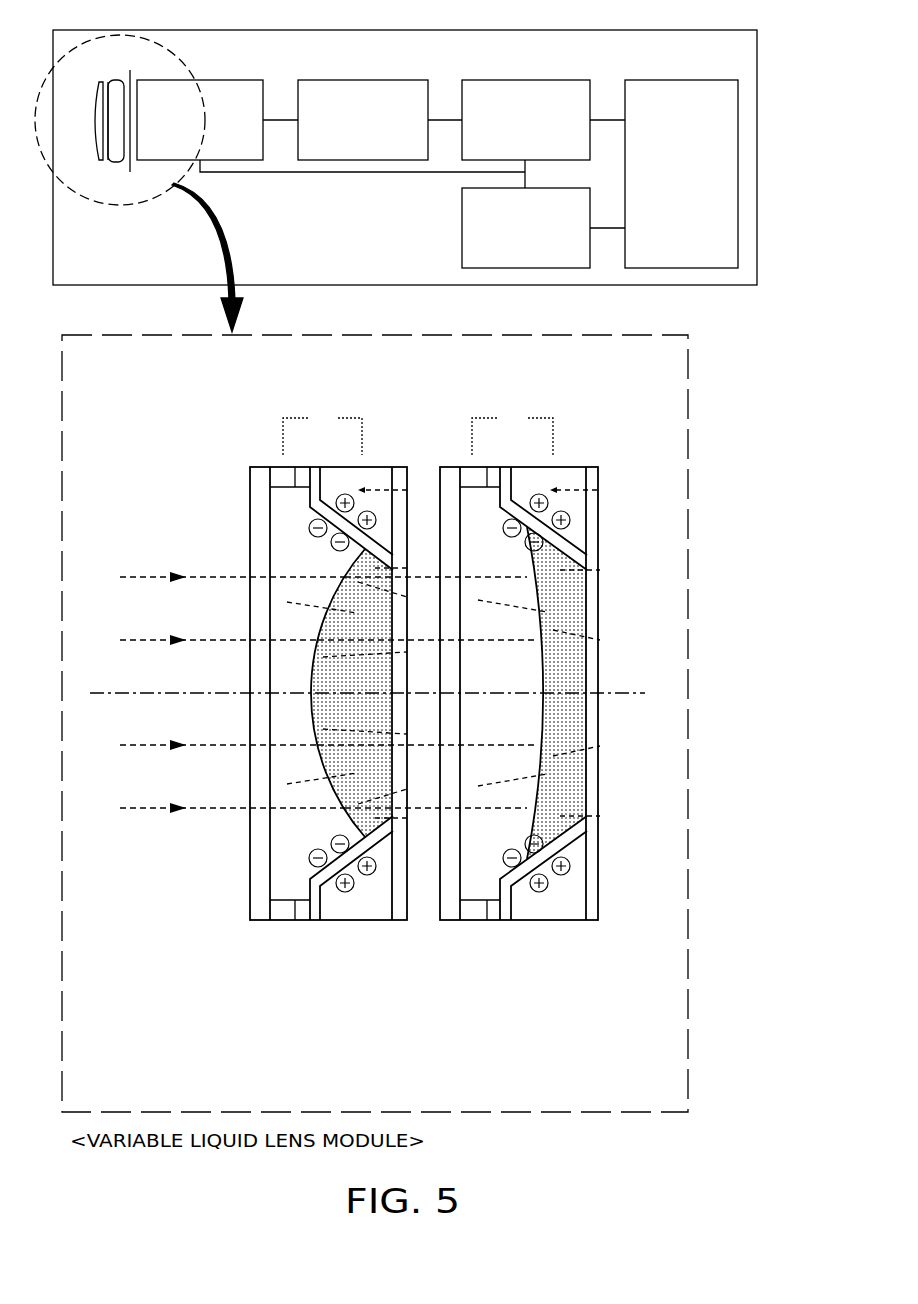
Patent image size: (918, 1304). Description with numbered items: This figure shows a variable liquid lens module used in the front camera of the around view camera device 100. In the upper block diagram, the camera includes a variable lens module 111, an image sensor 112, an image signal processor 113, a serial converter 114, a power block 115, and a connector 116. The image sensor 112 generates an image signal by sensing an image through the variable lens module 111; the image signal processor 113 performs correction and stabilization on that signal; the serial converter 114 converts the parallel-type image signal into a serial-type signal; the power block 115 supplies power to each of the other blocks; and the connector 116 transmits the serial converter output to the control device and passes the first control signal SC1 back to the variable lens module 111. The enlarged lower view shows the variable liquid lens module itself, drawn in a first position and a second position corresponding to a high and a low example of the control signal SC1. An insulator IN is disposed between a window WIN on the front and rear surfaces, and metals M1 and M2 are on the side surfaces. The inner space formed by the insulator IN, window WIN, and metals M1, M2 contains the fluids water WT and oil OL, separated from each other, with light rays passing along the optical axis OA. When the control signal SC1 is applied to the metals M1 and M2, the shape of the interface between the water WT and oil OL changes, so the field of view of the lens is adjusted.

The around view camera device 100 is at (713, 30).
The variable lens module 111 is at (96, 100).
The image sensor 112 is at (222, 78).
The image signal processor 113 is at (383, 78).
The serial converter 114 is at (547, 78).
The power block 115 is at (547, 188).
The connector 116 is at (697, 78).
The first control signal SC1 is at (414, 411).
The optical axis OA is at (367, 682).
The window WIN is at (240, 881).
The oil OL is at (449, 693).
The water WT is at (395, 618).
The first metal M1 is at (278, 926).
The second metal M2 is at (357, 926).
The insulator IN is at (300, 926).